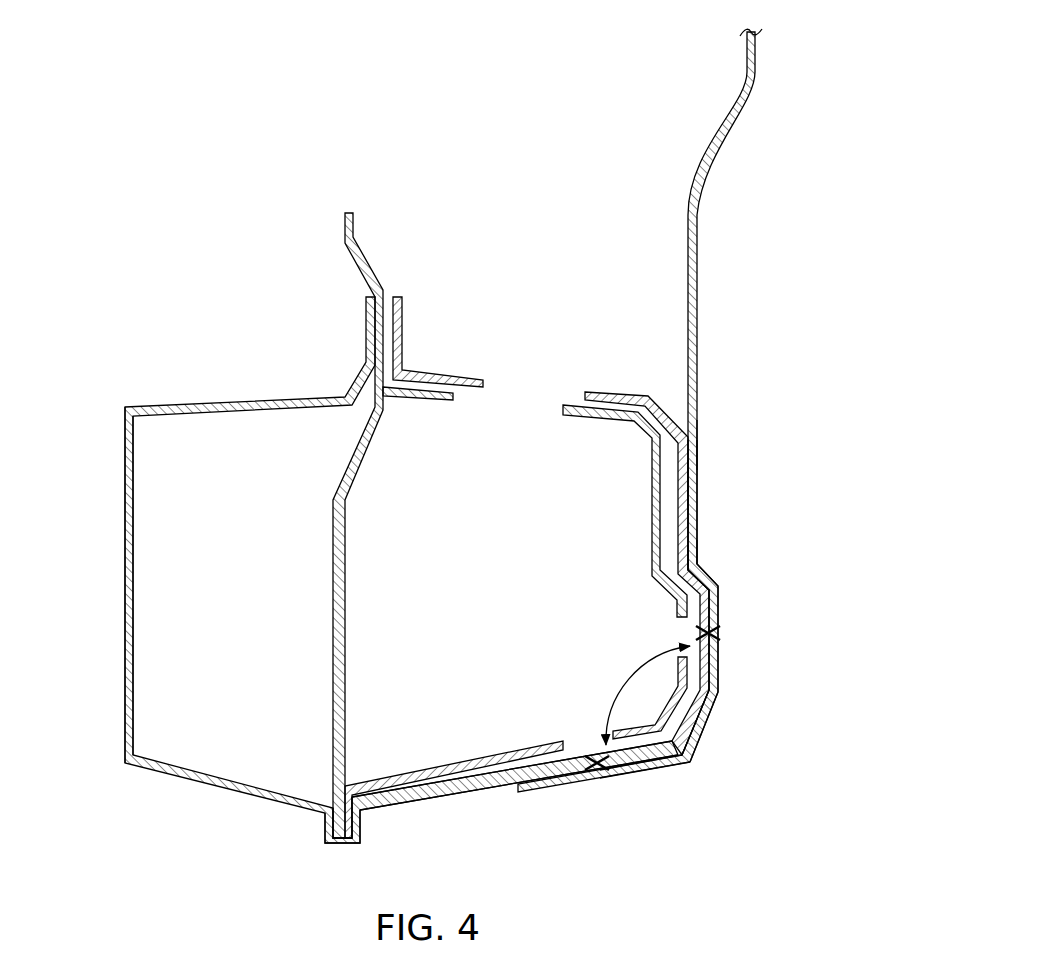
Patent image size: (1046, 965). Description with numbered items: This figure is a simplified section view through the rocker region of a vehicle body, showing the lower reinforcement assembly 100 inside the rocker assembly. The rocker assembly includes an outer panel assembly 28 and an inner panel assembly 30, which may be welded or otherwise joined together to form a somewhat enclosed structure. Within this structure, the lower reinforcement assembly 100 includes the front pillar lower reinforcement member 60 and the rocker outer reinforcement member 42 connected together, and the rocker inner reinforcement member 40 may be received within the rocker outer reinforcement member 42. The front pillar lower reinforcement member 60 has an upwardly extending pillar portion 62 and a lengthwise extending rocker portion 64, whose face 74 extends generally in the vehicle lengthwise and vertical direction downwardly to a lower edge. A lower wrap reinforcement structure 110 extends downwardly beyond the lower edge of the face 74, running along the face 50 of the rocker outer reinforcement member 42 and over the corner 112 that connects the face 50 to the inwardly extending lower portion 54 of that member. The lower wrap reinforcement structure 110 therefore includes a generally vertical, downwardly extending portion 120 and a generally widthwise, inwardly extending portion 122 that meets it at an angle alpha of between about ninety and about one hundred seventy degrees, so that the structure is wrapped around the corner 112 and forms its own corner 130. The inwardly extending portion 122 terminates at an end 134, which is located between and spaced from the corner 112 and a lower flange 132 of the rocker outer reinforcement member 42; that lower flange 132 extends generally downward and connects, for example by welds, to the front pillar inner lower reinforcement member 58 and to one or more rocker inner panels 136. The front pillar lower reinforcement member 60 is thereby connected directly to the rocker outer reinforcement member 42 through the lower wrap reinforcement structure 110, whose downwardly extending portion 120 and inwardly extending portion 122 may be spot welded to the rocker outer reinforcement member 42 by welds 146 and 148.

The outer panel assembly 28 is at (818, 232).
The inner panel assembly 30 is at (80, 404).
The rocker inner reinforcement member 40 is at (638, 489).
The rocker outer reinforcement member 42 is at (676, 405).
The face 50 is at (691, 480).
The inwardly extending lower portion 54 is at (645, 741).
The front pillar inner lower reinforcement member 58 is at (330, 600).
The front pillar lower reinforcement member 60 is at (712, 463).
The upwardly extending pillar portion 62 is at (740, 176).
The lengthwise extending rocker portion 64 is at (728, 557).
The face 74 is at (698, 442).
The lower reinforcement assembly 100 is at (578, 202).
The lower wrap reinforcement structure 110 is at (757, 697).
The corner 112 is at (703, 717).
The downwardly extending portion 120 is at (720, 672).
The inwardly extending portion 122 is at (684, 762).
The corner 130 is at (712, 708).
The lower flange 132 is at (364, 830).
The end 134 is at (518, 789).
The rocker inner panel 136 is at (123, 668).
The weld 146 is at (718, 634).
The weld 148 is at (596, 781).